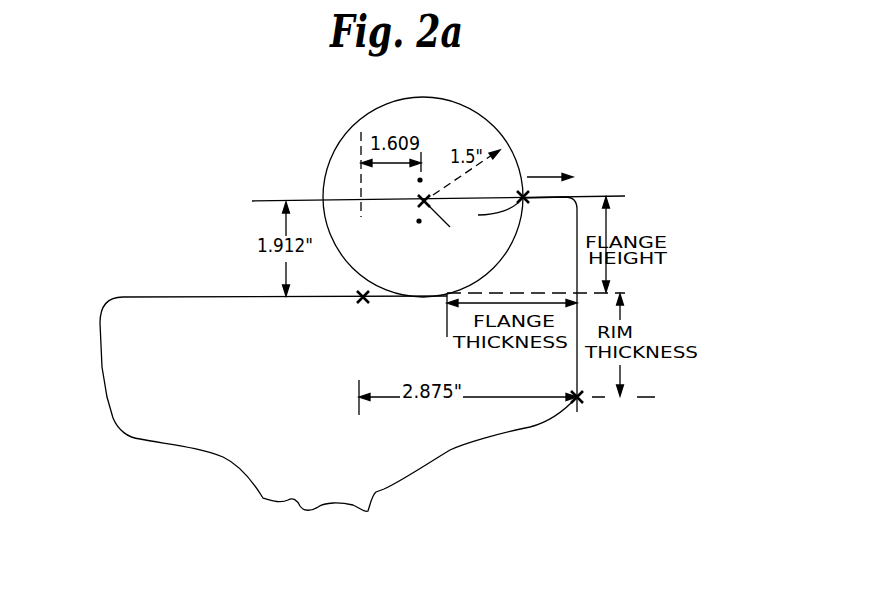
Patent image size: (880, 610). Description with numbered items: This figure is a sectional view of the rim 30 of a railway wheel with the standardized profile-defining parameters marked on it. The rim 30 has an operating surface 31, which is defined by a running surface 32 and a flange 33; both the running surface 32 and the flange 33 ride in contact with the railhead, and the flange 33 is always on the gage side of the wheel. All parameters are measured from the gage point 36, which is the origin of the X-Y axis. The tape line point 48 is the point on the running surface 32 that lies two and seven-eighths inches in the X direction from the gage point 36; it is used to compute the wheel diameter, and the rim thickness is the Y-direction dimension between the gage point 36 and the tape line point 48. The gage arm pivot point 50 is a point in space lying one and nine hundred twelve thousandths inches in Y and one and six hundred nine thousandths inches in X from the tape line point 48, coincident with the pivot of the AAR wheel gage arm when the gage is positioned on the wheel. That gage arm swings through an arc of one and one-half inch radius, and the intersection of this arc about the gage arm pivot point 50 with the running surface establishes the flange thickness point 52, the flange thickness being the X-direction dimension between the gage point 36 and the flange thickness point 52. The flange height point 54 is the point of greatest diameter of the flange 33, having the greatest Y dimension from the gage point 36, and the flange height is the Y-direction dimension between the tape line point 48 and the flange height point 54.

The rim 30 is at (205, 327).
The operating surface 31 is at (123, 297).
The running surface 32 is at (240, 297).
The flange 33 is at (558, 217).
The gage point 36 is at (585, 405).
The tape line point 48 is at (363, 286).
The gage arm pivot point 50 is at (433, 180).
The flange thickness point 52 is at (434, 301).
The flange height point 54 is at (527, 190).